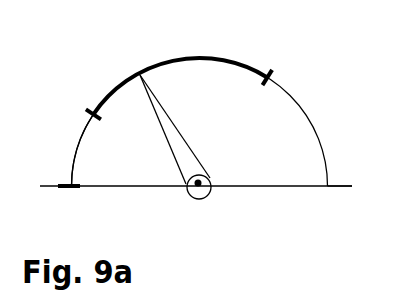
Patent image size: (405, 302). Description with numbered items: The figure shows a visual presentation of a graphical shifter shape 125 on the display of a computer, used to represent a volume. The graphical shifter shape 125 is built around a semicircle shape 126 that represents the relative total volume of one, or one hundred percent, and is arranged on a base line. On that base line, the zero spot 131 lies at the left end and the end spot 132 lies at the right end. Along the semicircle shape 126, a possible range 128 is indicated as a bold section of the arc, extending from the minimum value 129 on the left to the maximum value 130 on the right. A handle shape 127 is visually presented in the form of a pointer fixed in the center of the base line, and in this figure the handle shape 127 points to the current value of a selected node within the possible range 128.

The graphical shifter shape 125 is at (275, 205).
The semicircle shape 126 is at (72, 162).
The handle shape 127 is at (178, 135).
The possible range 128 is at (170, 55).
The minimum value 129 is at (87, 108).
The maximum value 130 is at (273, 72).
The zero spot 131 is at (74, 188).
The end spot 132 is at (330, 185).